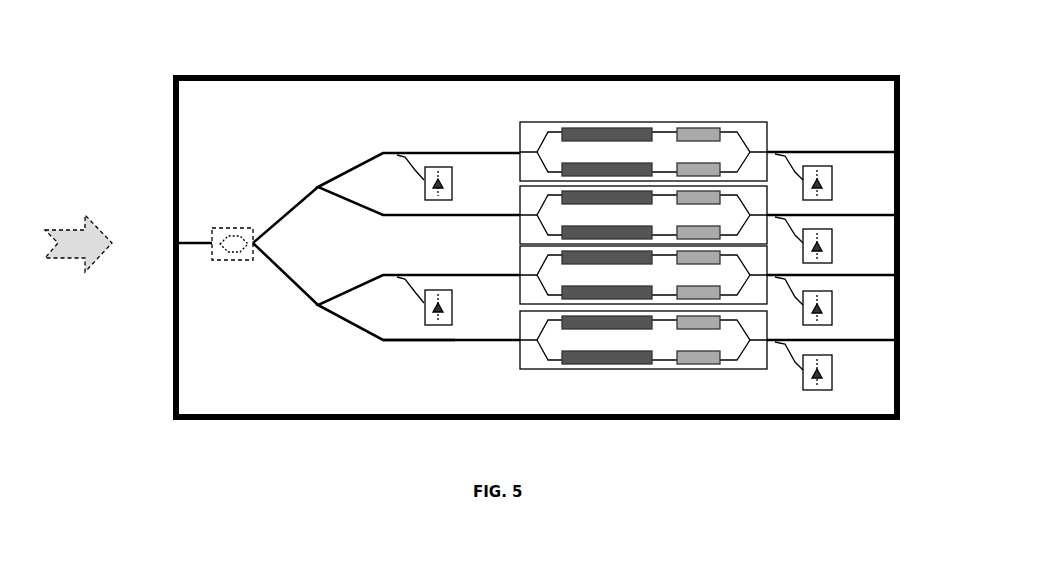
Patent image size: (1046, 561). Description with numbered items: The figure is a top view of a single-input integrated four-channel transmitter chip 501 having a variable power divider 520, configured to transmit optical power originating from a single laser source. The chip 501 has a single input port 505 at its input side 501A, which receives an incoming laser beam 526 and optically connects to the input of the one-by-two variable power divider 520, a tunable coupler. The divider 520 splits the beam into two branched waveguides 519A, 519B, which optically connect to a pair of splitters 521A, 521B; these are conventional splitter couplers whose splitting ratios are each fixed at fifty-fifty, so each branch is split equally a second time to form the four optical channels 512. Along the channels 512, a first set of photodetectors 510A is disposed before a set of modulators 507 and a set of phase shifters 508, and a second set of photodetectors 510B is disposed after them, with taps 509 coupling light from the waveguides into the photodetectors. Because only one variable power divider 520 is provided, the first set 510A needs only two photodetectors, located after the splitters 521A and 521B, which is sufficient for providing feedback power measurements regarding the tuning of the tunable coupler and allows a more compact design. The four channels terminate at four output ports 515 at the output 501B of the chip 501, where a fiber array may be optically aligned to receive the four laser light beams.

The transmitter chip 501 is at (858, 113).
The first edge of chip 501A is at (180, 52).
The output of the transmitter chip 501B is at (887, 50).
The incoming laser beam 526 is at (85, 256).
The input port 505 is at (152, 276).
The variable power divider 520 is at (232, 262).
The branched waveguide 519A is at (288, 212).
The branched waveguide 519B is at (283, 277).
The splitter 521A is at (318, 186).
The splitter 521B is at (318, 306).
The optical tap 509 is at (410, 170).
The first set of photodetectors 510A is at (432, 202).
The second set of photodetectors 510B is at (834, 315).
The optical channels 512 is at (415, 367).
The modulators 507 is at (607, 268).
The phase shifters 508 is at (697, 268).
The output ports 515 is at (857, 284).